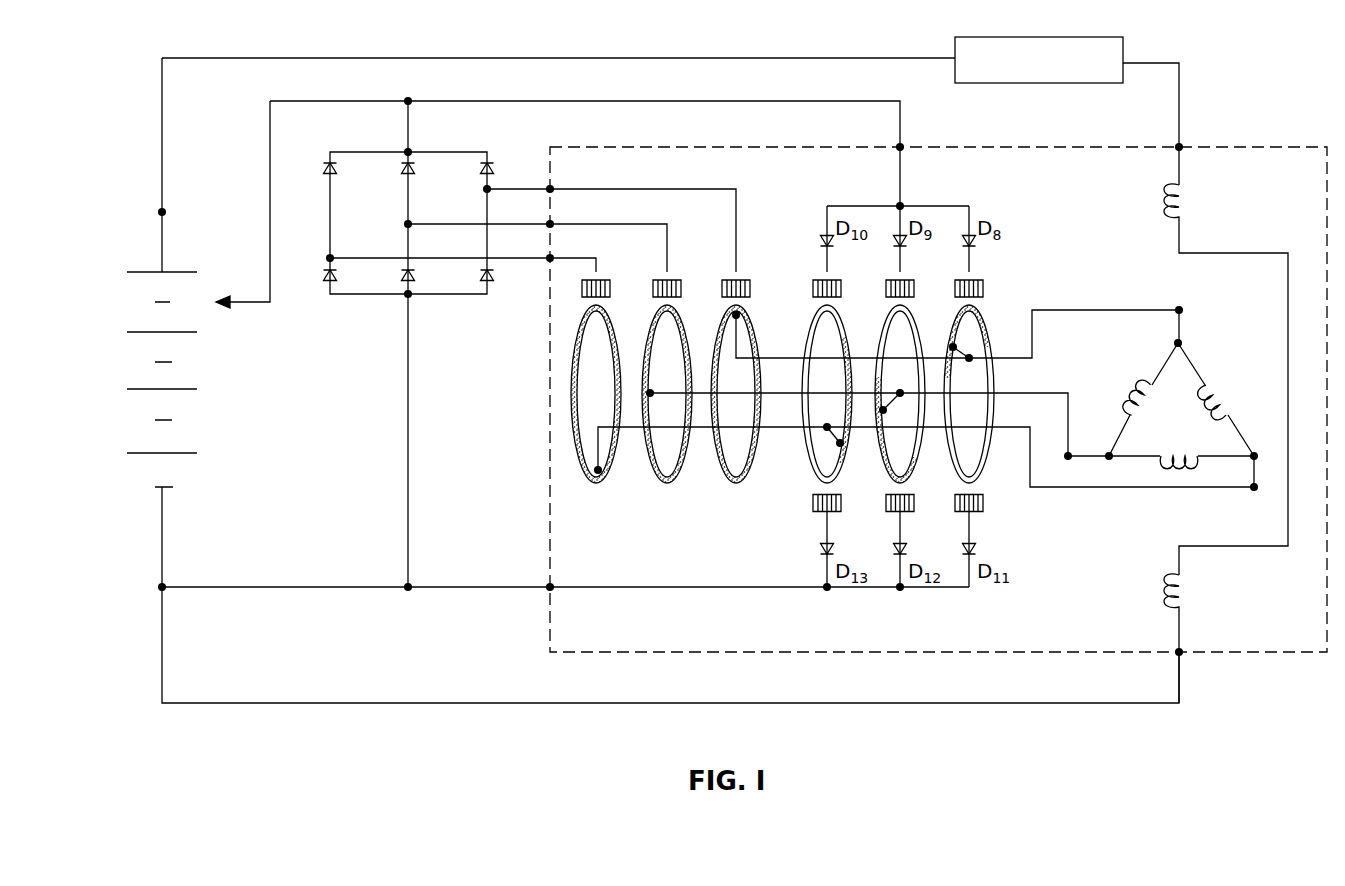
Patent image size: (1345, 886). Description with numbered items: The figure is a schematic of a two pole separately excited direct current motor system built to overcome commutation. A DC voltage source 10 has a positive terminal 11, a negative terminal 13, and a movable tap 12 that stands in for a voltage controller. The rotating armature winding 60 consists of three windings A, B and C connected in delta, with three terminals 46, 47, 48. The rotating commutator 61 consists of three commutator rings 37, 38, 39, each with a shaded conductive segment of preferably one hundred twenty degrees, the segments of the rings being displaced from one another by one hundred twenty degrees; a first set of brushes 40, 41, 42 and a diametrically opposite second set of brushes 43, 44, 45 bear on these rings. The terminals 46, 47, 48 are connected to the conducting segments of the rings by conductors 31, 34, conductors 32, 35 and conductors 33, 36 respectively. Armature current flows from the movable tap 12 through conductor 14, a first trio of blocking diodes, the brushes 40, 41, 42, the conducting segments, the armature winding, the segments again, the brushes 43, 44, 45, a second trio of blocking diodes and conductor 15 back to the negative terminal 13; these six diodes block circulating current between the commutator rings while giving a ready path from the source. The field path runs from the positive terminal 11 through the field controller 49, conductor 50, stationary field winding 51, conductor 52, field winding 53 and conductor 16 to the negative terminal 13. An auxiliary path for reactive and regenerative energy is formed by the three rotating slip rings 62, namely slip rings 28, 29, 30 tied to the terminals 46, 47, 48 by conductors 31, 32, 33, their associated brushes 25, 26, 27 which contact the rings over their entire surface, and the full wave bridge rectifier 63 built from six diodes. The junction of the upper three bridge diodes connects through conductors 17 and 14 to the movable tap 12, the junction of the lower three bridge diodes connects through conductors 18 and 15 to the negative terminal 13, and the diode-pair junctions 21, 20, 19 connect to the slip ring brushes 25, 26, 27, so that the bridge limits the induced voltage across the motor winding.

The voltage source 10 is at (126, 270).
The positive terminal 11 is at (166, 212).
The movable tap 12 is at (222, 312).
The negative terminal 13 is at (168, 583).
The conductor 14 is at (329, 98).
The conductor 15 is at (294, 590).
The conductor 16 is at (306, 701).
The conductor 17 is at (412, 136).
The conductor 18 is at (413, 455).
The bridge junction 19 is at (333, 256).
The bridge junction 20 is at (394, 221).
The bridge junction 21 is at (478, 195).
The slip ring brush 25 is at (740, 278).
The slip ring brush 26 is at (672, 278).
The slip ring brush 27 is at (600, 278).
The slip ring 28 is at (756, 331).
The slip ring 29 is at (686, 331).
The slip ring 30 is at (615, 331).
The conductor 31 is at (1002, 362).
The conductor 32 is at (1002, 397).
The conductor 33 is at (1001, 432).
The conductor 34 is at (958, 356).
The conductor 35 is at (893, 399).
The conductor 36 is at (838, 432).
The commutator ring 37 is at (990, 331).
The commutator ring 38 is at (918, 331).
The commutator ring 39 is at (847, 331).
The brush 40 is at (975, 278).
The brush 41 is at (902, 278).
The brush 42 is at (831, 278).
The brush 43 is at (975, 512).
The brush 44 is at (905, 512).
The brush 45 is at (833, 512).
The armature winding terminal 46 is at (1184, 310).
The armature winding terminal 47 is at (1070, 460).
The armature winding terminal 48 is at (1254, 493).
The field controller 49 is at (1039, 60).
The conductor 50 is at (1182, 103).
The field winding 51 is at (1195, 201).
The conductor 52 is at (1290, 328).
The field winding 53 is at (1200, 592).
The armature winding 60 is at (1119, 302).
The commutator 61 is at (1004, 298).
The slip rings 62 is at (745, 244).
The full wave bridge rectifier 63 is at (489, 150).